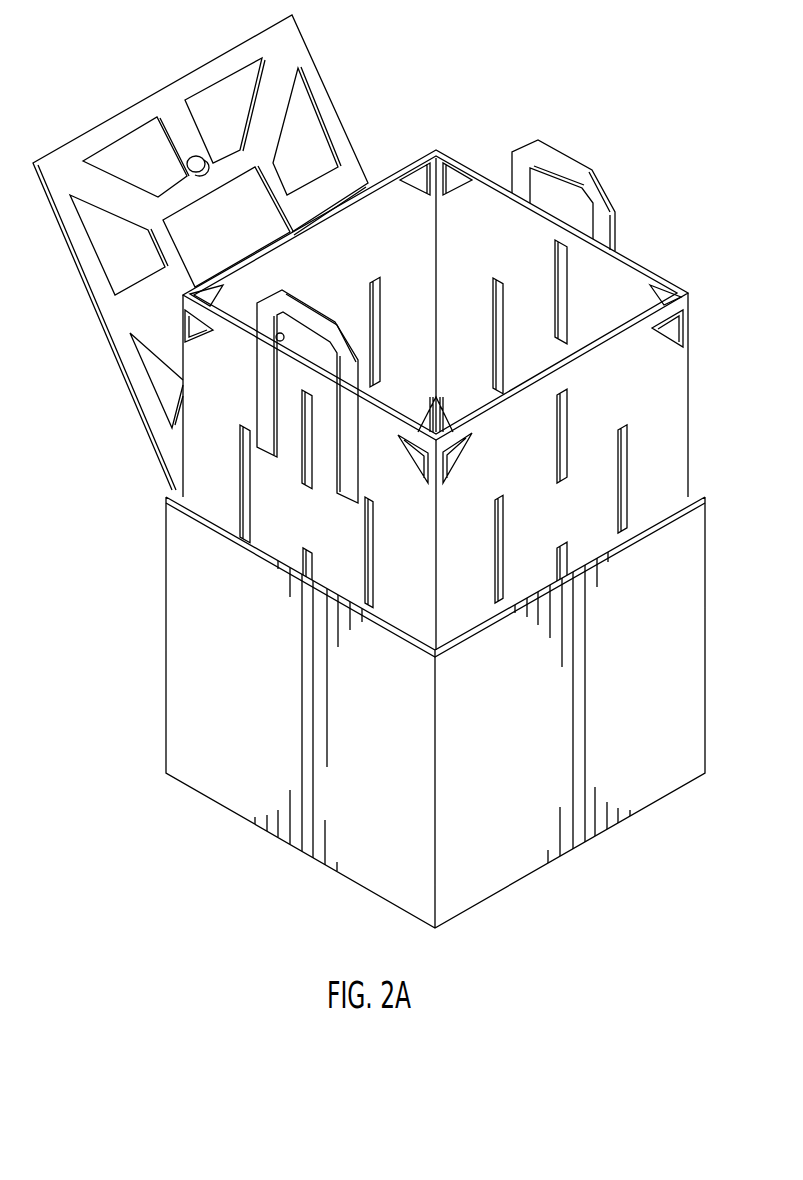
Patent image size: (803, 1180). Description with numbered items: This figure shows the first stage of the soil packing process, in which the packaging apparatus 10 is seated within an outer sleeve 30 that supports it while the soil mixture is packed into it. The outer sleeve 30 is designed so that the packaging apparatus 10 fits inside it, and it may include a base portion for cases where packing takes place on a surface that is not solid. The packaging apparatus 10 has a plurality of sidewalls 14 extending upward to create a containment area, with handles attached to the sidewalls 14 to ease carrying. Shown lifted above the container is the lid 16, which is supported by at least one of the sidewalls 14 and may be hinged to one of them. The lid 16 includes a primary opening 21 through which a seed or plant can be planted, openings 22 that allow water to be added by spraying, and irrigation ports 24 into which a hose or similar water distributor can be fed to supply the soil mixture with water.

The packaging apparatus 10 is at (463, 376).
The sidewalls 14 is at (478, 232).
The lid 16 is at (206, 252).
The primary opening 21 is at (262, 200).
The openings 22 is at (213, 94).
The irrigation ports 24 is at (196, 157).
The outer sleeve 30 is at (195, 652).